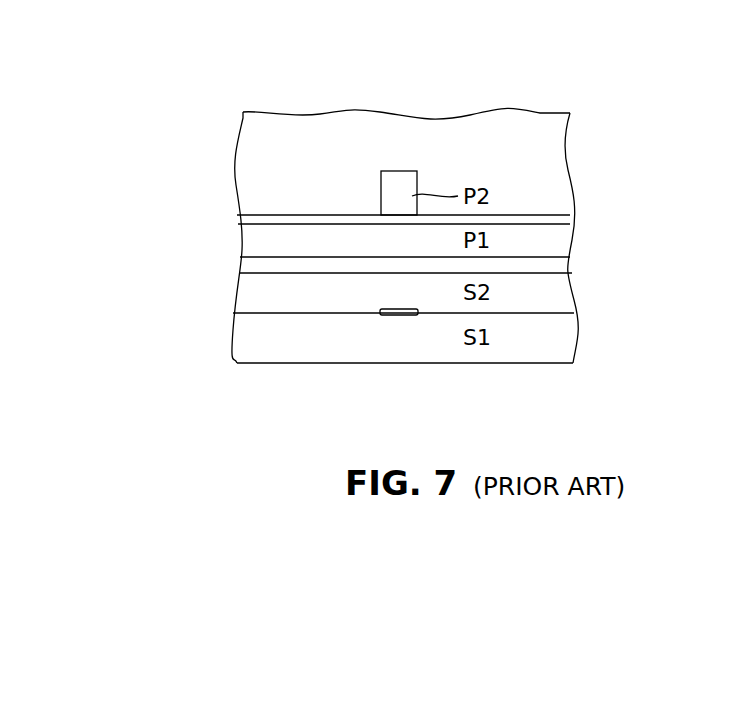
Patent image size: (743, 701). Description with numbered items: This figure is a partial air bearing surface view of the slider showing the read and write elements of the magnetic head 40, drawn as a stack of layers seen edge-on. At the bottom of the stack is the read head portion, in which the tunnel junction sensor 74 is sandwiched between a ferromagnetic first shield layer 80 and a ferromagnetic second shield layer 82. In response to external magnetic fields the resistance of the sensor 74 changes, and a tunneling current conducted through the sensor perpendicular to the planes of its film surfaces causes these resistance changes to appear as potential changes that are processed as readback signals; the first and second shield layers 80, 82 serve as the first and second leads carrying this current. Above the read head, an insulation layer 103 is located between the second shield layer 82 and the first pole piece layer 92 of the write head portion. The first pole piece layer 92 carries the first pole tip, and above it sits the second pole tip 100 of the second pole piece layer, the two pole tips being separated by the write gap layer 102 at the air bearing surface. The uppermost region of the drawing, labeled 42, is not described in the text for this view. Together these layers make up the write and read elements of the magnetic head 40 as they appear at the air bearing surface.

The magnetic head 40 is at (596, 126).
The top insulating/overcoat layer 42 is at (247, 142).
The second pole tip 100 is at (396, 178).
The write gap layer 102 is at (313, 214).
The first pole piece layer 92 is at (250, 238).
The insulation layer 103 is at (562, 263).
The second shield layer 82 is at (247, 292).
The first shield layer 80 is at (562, 343).
The tunnel junction sensor 74 is at (396, 315).